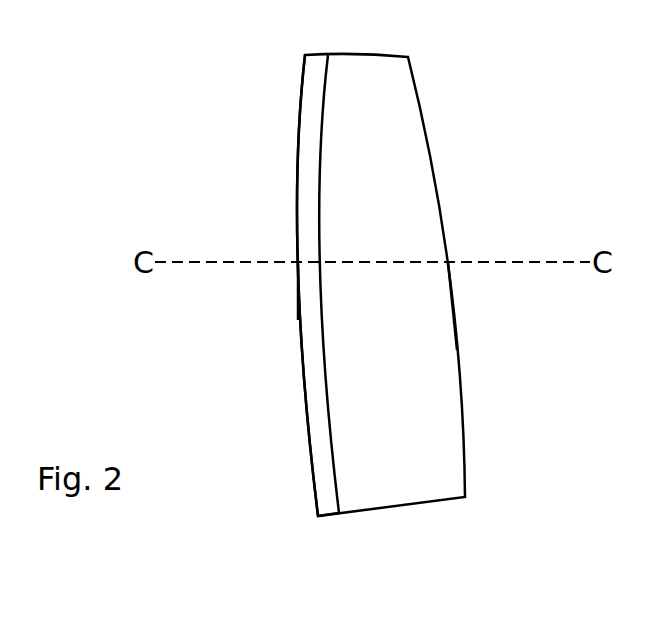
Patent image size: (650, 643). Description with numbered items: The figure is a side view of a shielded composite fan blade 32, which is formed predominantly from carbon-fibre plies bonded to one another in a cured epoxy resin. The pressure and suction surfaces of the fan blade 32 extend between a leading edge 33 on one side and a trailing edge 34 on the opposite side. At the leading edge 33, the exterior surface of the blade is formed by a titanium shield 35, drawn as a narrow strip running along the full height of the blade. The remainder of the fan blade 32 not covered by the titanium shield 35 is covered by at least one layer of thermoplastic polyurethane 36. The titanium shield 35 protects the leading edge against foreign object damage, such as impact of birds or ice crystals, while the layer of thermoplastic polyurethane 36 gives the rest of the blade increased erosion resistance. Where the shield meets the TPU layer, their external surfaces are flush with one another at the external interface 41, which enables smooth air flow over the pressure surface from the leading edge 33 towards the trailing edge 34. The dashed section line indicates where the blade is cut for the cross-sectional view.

The fan blade 32 is at (455, 532).
The leading edge 33 is at (290, 319).
The trailing edge 34 is at (462, 318).
The titanium shield 35 is at (310, 162).
The layer of thermoplastic polyurethane 36 is at (401, 183).
The external interface 41 is at (333, 483).